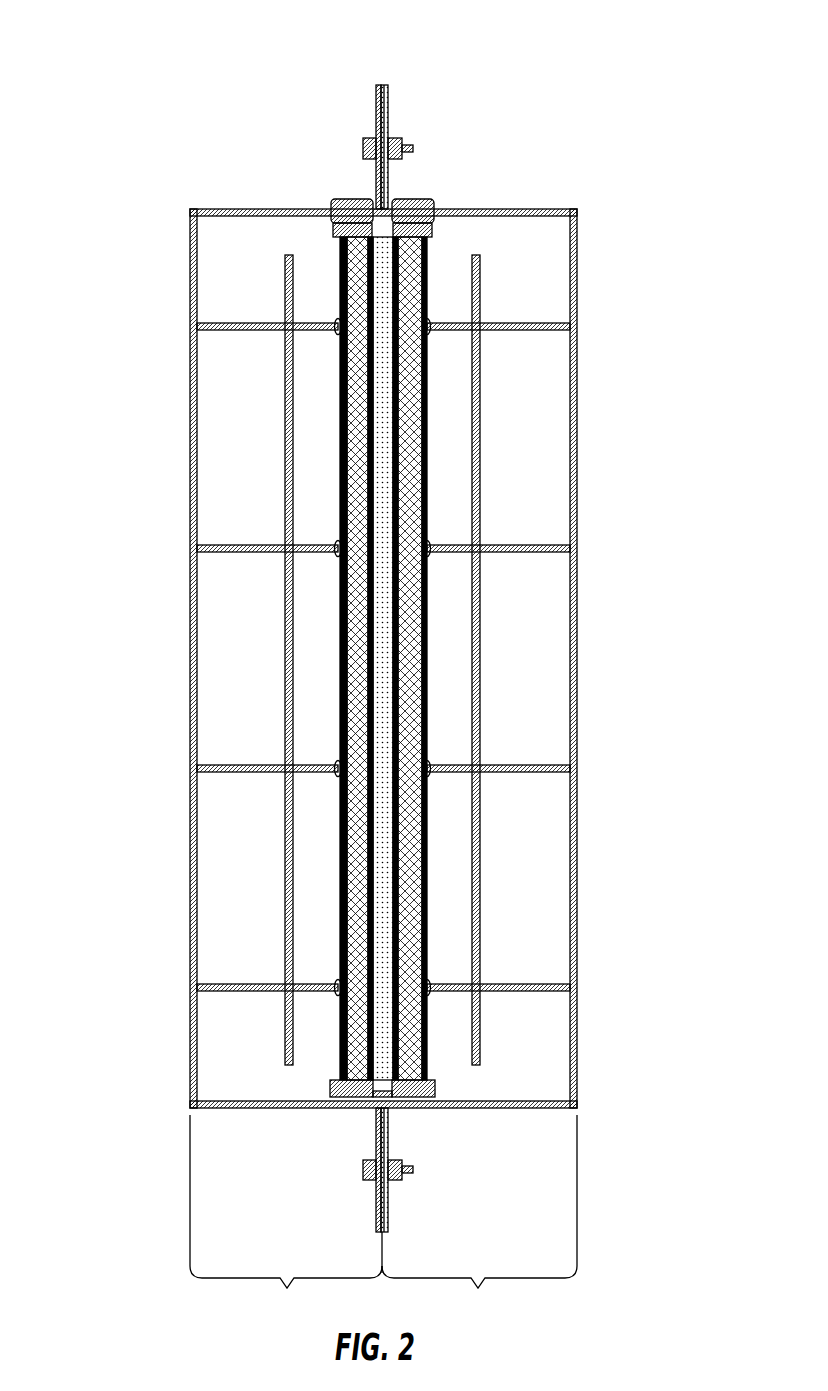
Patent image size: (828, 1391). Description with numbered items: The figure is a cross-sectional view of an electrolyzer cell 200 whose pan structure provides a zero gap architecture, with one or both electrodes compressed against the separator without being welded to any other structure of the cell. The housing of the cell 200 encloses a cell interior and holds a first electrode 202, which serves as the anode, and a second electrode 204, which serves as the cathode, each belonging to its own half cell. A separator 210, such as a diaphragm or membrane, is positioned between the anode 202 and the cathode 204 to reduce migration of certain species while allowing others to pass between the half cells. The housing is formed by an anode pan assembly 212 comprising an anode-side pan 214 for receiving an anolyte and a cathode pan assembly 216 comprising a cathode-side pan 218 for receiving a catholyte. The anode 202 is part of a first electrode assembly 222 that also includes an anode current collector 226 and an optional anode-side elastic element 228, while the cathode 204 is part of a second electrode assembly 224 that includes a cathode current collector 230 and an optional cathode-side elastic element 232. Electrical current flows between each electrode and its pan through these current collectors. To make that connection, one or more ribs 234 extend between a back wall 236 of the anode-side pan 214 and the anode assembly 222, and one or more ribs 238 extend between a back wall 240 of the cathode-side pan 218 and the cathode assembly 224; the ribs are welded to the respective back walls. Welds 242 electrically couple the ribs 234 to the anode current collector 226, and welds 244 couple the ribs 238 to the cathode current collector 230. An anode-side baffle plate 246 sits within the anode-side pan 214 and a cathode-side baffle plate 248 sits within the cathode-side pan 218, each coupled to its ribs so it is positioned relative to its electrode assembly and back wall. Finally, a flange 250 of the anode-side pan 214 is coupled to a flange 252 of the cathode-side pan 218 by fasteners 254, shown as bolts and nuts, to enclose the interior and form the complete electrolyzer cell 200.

The electrolyzer cell 200 is at (120, 65).
The first electrode 202 is at (368, 587).
The second electrode 204 is at (410, 577).
The separator 210 is at (387, 440).
The anode pan assembly 212 is at (286, 1219).
The anode-side pan 214 is at (166, 380).
The cathode pan assembly 216 is at (479, 1219).
The cathode-side pan 218 is at (606, 838).
The first electrode assembly 222 is at (350, 199).
The second electrode assembly 224 is at (413, 199).
The anode current collector 226 is at (345, 660).
The anode-side elastic element 228 is at (353, 885).
The cathode current collector 230 is at (422, 660).
The cathode-side elastic element 232 is at (408, 885).
The ribs 234 is at (222, 331).
The back wall 236 is at (190, 653).
The ribs 238 is at (543, 331).
The back wall 240 is at (578, 643).
The welds 242 is at (337, 320).
The welds 244 is at (427, 320).
The anode-side baffle plate 246 is at (287, 817).
The cathode-side baffle plate 248 is at (480, 817).
The flange 250 is at (378, 108).
The flange 252 is at (388, 110).
The fasteners 254 is at (413, 148).